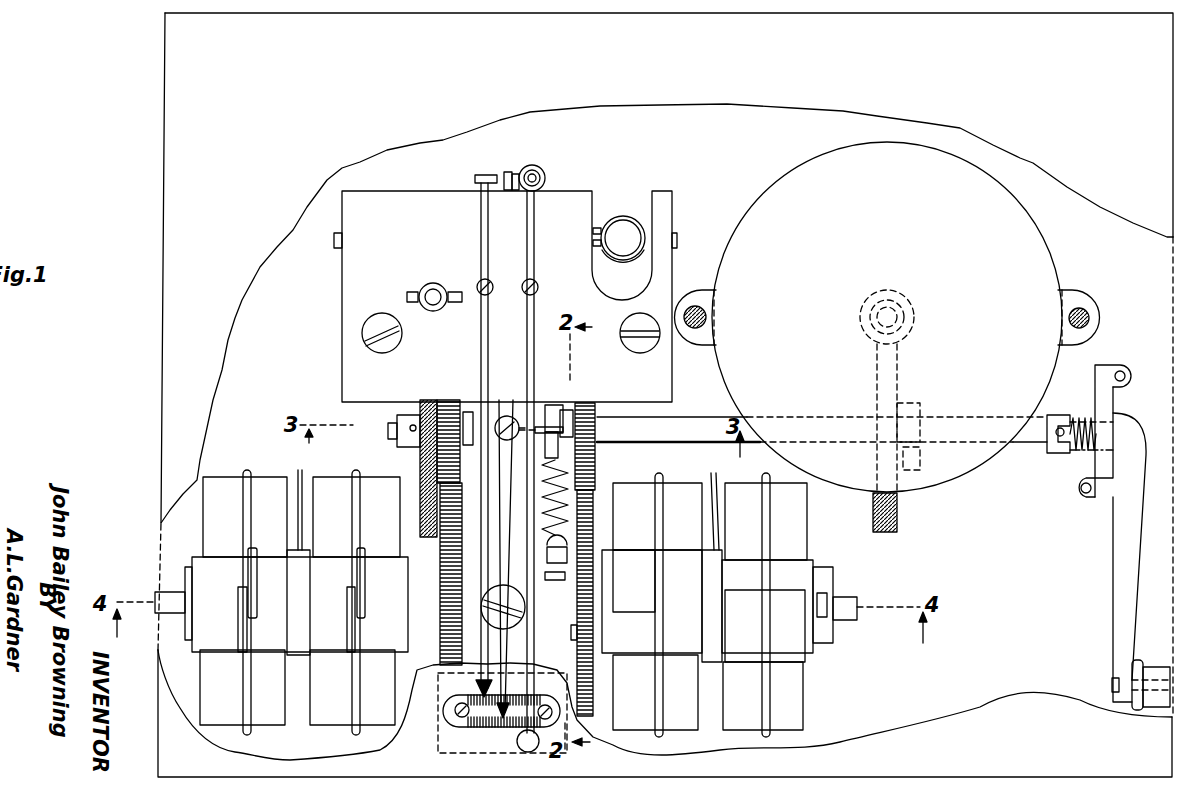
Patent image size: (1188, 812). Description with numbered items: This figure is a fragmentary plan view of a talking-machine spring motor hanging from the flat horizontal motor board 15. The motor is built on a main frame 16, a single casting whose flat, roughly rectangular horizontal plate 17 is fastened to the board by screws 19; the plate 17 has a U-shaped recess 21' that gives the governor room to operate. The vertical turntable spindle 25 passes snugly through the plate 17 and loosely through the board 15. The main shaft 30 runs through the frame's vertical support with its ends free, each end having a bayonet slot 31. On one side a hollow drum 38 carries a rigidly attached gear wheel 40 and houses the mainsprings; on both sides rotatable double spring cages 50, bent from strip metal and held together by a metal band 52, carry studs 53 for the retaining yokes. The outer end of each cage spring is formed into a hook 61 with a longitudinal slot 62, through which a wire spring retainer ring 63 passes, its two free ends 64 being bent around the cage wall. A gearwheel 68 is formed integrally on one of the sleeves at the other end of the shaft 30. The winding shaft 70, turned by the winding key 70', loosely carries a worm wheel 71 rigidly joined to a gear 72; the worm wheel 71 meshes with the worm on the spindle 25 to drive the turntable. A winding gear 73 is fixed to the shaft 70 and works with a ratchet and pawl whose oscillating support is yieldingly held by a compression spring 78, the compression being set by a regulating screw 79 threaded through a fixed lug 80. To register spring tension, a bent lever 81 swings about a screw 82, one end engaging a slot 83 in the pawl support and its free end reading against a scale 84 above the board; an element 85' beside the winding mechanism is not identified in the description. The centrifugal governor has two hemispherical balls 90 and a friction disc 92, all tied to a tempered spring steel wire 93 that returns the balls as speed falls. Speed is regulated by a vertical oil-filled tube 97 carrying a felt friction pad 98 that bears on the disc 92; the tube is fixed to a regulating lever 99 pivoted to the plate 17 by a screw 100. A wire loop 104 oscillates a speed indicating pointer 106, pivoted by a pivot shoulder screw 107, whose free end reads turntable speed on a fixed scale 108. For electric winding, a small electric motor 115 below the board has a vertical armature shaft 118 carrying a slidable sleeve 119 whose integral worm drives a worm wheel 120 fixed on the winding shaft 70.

The motor board 15 is at (665, 438).
The main frame 16 is at (481, 296).
The horizontal plate or base portion 17 is at (505, 301).
The screws 19 is at (384, 346).
The U-shaped recess 21' is at (613, 199).
The turntable spindle 25 is at (433, 290).
The shaft 30 is at (186, 585).
The bayonet slot 31 is at (154, 599).
The hollow drum 38 is at (561, 633).
The gear wheel 40 is at (593, 503).
The double spring cage 50 is at (330, 640).
The metal band 52 is at (510, 555).
The studs 53 is at (300, 604).
The hook 61 is at (745, 600).
The slot 62 is at (707, 601).
The spring retainer ring 63 is at (247, 472).
The free ends 64 is at (251, 578).
The gearwheel 68 is at (440, 548).
The winding shaft 70 is at (697, 421).
The winding key 70' is at (1108, 537).
The worm wheel 71 is at (420, 462).
The gear 72 is at (446, 428).
The winding gear 73 is at (595, 464).
The compression spring 78 is at (597, 446).
The regulating screw 79 is at (567, 571).
The fixed lug 80 is at (570, 548).
The bent lever 81 is at (475, 412).
The screw 82 is at (509, 417).
The slot 83 is at (552, 405).
The scale 84 is at (500, 724).
The spring bracket 85' is at (1067, 449).
The hemispherical balls 90 is at (623, 232).
The friction disc 92 is at (502, 175).
The tempered spring steel wire 93 is at (623, 262).
The vertical tube 97 is at (543, 170).
The friction pad 98 is at (514, 172).
The regulating lever 99 is at (529, 166).
The screw 100 is at (536, 284).
The loop 104 is at (474, 181).
The speed indicating pointer 106 is at (480, 212).
The pivot shoulder screw 107 is at (480, 282).
The fixed scale 108 is at (460, 725).
The electric motor 115 is at (884, 308).
The armature shaft 118 is at (914, 318).
The sleeve 119 is at (866, 331).
The worm wheel 120 is at (897, 519).